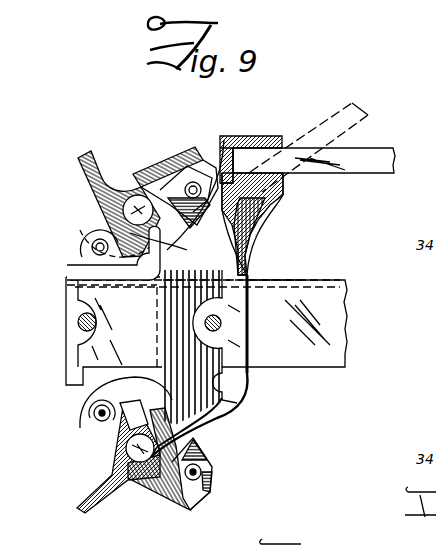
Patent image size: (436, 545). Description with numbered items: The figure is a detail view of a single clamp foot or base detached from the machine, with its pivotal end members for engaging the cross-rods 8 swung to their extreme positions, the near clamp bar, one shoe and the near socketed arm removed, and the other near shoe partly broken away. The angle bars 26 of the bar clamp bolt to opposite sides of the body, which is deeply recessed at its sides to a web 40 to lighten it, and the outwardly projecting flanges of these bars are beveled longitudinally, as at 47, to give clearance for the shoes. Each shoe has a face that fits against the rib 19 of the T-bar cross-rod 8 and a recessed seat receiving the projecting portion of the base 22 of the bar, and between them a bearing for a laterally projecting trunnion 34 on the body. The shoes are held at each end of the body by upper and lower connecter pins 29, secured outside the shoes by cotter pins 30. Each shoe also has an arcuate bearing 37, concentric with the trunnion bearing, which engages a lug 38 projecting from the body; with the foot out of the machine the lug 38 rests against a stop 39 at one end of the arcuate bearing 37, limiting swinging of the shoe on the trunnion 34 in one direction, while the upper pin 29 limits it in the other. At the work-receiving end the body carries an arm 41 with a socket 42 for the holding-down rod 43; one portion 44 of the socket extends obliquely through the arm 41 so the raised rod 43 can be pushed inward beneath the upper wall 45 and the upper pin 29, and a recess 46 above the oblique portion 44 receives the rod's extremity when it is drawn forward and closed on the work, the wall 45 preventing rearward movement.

The cross-rod 8 is at (193, 511).
The rib 19 is at (159, 175).
The base 22 is at (85, 162).
The angle bar 26 is at (327, 353).
The pin 29 is at (88, 252).
The cotter pin 30 is at (203, 458).
The trunnion 34 is at (138, 200).
The arcuate bearing 37 is at (155, 445).
The lug 38 is at (243, 405).
The stop 39 is at (103, 435).
The web 40 is at (102, 350).
The arm 41 is at (273, 133).
The socket 42 is at (255, 143).
The holding-down rod 43 is at (352, 104).
The oblique portion 44 is at (270, 200).
The upper wall 45 is at (218, 178).
The recess 46 is at (228, 140).
The beveled flange 47 is at (293, 277).